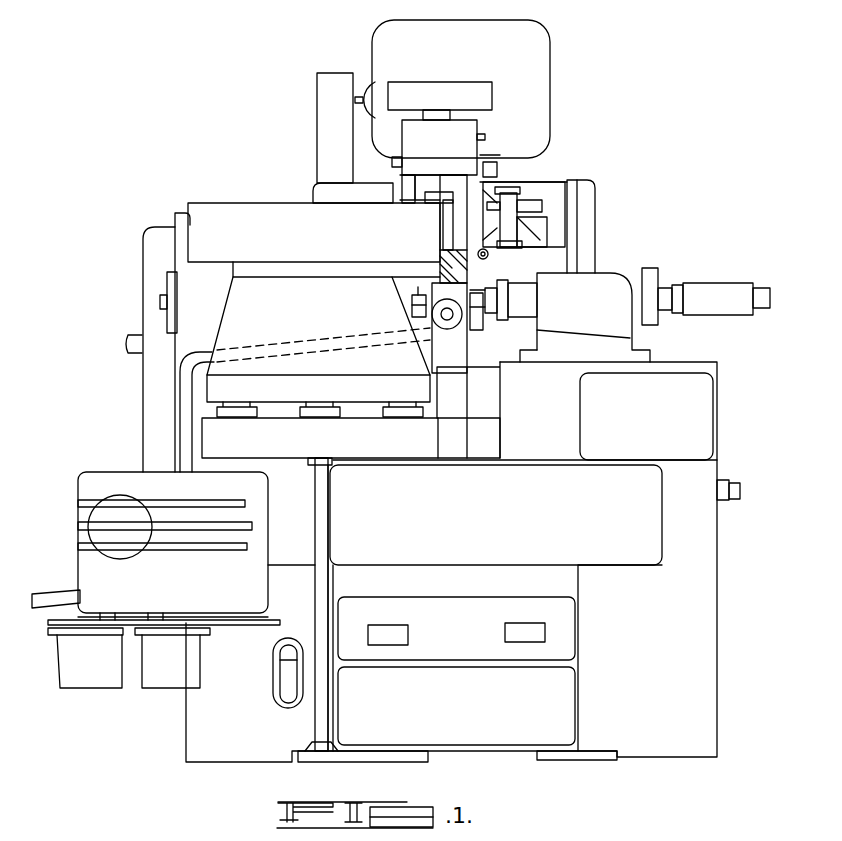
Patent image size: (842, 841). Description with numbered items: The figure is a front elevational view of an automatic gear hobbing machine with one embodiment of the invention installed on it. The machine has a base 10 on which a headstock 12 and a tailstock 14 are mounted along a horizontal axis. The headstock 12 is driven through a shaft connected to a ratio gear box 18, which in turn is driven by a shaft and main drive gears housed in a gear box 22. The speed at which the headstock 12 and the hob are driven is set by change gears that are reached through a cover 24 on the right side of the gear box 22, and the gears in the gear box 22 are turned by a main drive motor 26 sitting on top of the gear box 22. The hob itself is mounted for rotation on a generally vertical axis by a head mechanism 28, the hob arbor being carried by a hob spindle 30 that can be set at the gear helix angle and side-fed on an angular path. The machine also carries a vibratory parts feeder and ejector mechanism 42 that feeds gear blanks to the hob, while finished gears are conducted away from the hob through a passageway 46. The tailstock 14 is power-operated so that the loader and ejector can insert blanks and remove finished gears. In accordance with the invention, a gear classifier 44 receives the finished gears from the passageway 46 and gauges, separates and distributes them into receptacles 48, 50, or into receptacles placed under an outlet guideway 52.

The base 10 is at (520, 508).
The headstock 12 is at (167, 272).
The tailstock 14 is at (600, 304).
The ratio gear box 18 is at (142, 300).
The gear box 22 is at (545, 180).
The cover 24 is at (593, 193).
The main drive motor 26 is at (530, 62).
The head mechanism 28 is at (478, 137).
The hob spindle 30 is at (466, 271).
The parts feeder and ejector mechanism 42 is at (320, 310).
The gear classifier 44 is at (212, 587).
The passageway 46 is at (349, 334).
The receptacle 48 is at (188, 662).
The receptacle 50 is at (106, 666).
The outlet guideway 52 is at (58, 592).